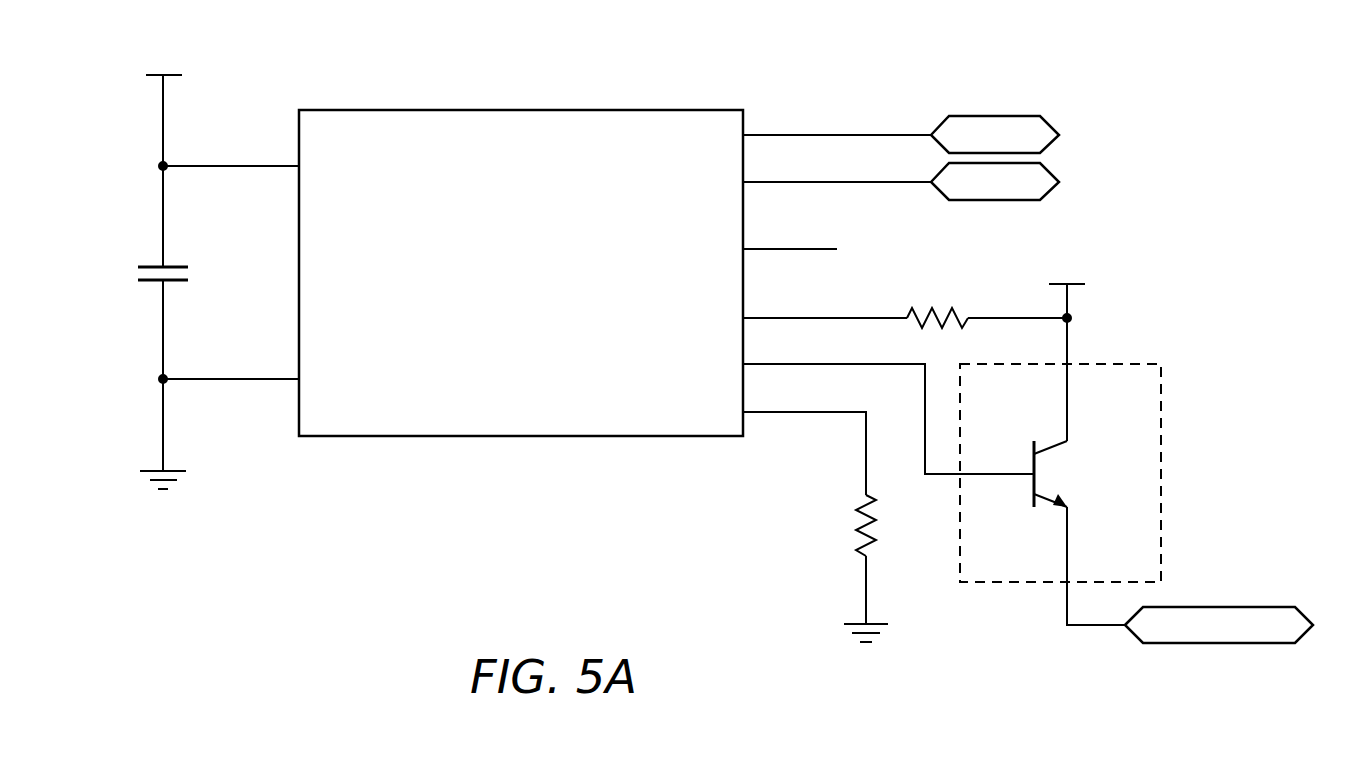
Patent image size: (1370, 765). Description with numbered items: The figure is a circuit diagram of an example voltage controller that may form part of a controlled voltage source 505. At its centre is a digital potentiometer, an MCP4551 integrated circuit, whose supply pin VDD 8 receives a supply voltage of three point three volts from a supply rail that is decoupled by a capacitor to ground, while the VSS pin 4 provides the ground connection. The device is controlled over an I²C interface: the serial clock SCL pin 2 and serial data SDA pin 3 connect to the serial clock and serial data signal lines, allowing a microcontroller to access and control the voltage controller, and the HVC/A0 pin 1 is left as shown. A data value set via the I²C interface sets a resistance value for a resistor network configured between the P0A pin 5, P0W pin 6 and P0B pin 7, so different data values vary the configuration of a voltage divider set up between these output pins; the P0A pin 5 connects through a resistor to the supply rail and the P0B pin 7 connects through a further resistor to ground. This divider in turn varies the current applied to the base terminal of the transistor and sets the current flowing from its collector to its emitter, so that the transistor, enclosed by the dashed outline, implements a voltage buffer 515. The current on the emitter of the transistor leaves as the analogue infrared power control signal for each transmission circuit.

The controlled voltage source 505 is at (1182, 142).
The voltage buffer 515 is at (1161, 382).
The pin 1 HVC/A0 1 is at (790, 235).
The pin 2 SCL 2 is at (837, 121).
The pin 3 SDA 3 is at (837, 168).
The pin 4 VSS 4 is at (231, 365).
The pin 5 P0A 5 is at (825, 304).
The pin 6 P0W 6 is at (888, 405).
The pin 7 P0B 7 is at (804, 440).
The pin 8 VDD 8 is at (231, 152).